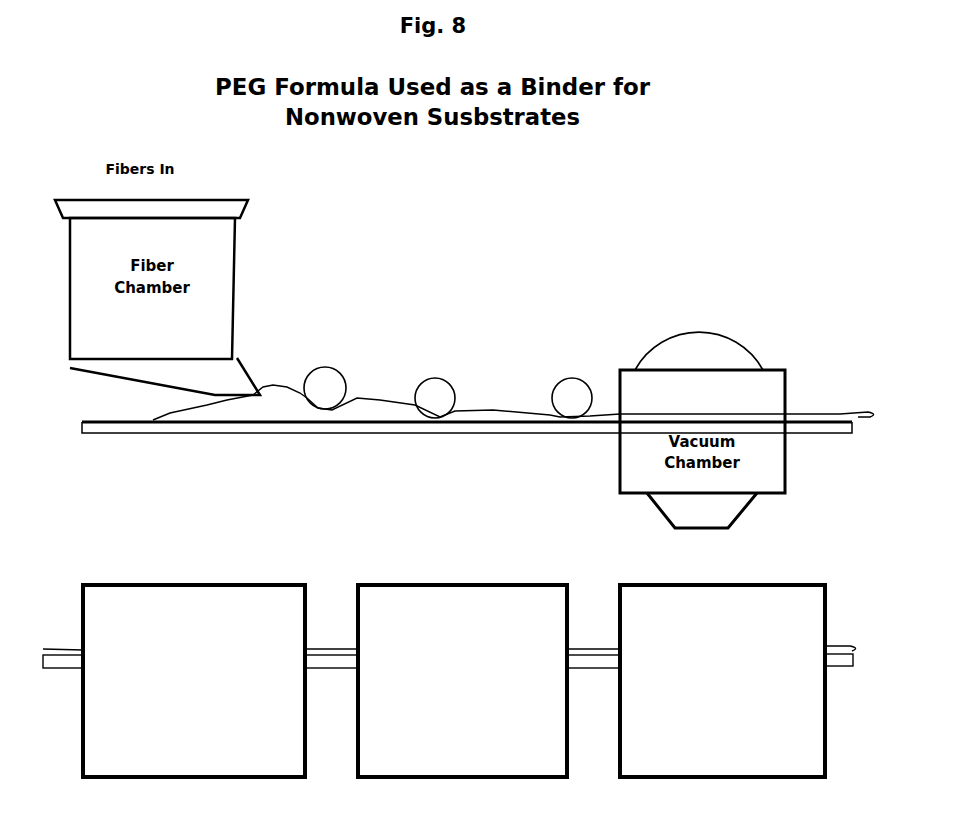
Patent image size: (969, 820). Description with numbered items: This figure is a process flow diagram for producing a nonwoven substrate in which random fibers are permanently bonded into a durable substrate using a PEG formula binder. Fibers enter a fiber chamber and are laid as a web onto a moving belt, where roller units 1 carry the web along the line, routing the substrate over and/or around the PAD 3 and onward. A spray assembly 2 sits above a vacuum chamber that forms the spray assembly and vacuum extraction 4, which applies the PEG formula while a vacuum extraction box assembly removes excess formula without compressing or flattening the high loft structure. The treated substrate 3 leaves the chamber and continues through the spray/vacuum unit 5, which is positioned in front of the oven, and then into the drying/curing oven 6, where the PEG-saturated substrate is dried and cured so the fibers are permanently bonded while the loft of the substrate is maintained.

The binder application rollers 1 is at (448, 392).
The binder spray dome 2 is at (672, 340).
The PAD 3 is at (827, 414).
The vacuum extraction box assembly 4 is at (194, 681).
The spray/vacuum unit 5 is at (462, 681).
The drying/curing oven 6 is at (722, 681).